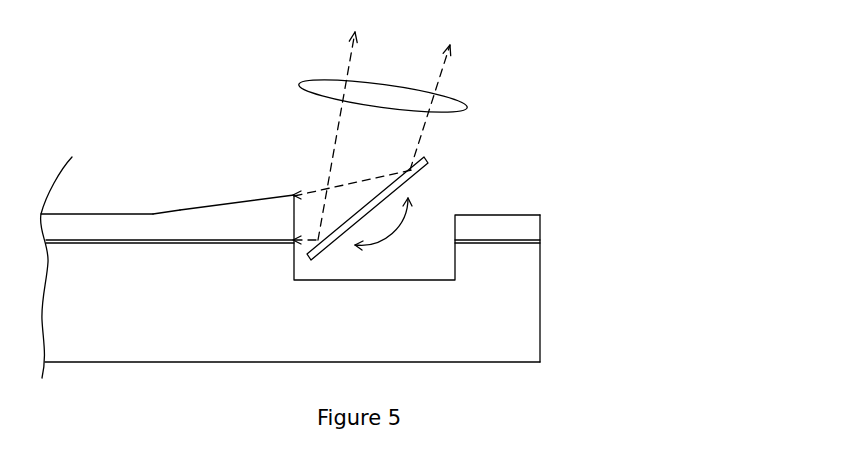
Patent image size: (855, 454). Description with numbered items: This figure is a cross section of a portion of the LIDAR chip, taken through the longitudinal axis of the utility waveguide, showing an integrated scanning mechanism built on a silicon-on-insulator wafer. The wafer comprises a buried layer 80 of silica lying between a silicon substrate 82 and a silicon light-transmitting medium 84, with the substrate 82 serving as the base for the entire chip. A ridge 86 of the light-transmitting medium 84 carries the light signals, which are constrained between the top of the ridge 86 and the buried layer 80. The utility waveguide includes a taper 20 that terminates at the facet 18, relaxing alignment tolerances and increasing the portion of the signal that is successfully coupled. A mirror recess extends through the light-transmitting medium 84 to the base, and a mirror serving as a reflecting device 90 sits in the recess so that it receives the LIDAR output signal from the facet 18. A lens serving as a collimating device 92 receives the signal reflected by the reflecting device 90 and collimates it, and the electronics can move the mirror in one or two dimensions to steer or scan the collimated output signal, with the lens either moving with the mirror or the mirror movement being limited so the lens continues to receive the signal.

The facet 18 is at (290, 220).
The taper 20 is at (257, 197).
The buried layer 80 is at (125, 243).
The substrate 82 is at (133, 352).
The light-transmitting medium 84 is at (110, 223).
The ridge 86 is at (128, 214).
The reflecting device 90 is at (430, 163).
The collimating device 92 is at (465, 105).